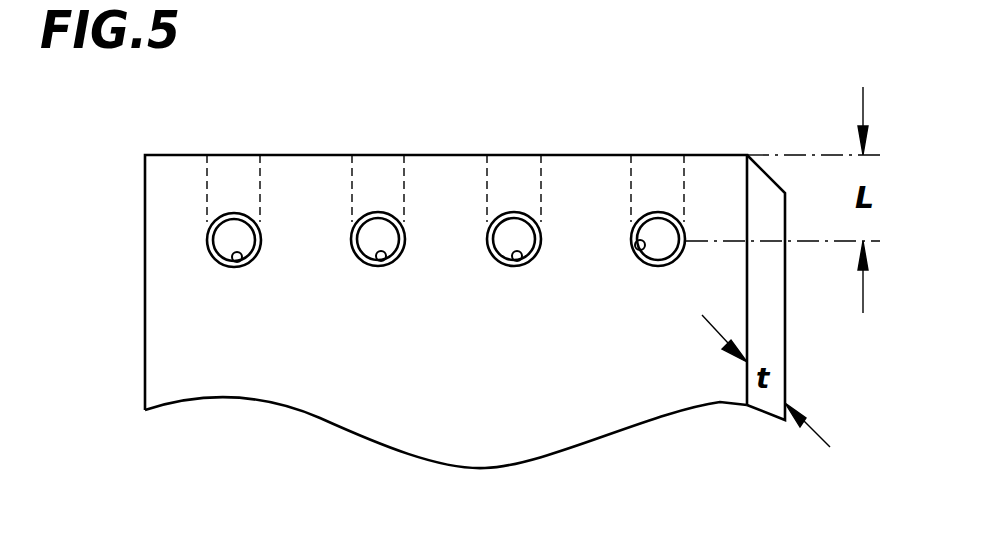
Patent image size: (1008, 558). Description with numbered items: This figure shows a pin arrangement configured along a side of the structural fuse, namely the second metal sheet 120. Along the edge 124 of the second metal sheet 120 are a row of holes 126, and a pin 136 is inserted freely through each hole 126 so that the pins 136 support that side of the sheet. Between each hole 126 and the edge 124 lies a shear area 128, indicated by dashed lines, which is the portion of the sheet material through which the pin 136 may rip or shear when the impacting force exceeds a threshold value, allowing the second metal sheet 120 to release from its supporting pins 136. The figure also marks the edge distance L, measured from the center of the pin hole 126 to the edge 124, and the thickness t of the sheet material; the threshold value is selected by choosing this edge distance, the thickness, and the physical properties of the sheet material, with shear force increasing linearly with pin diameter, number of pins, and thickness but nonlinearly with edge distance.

The second metal sheet 120 is at (565, 386).
The edge 124 is at (718, 155).
The holes 126 is at (215, 261).
The shear area 128 is at (255, 197).
The pins 136 is at (240, 262).